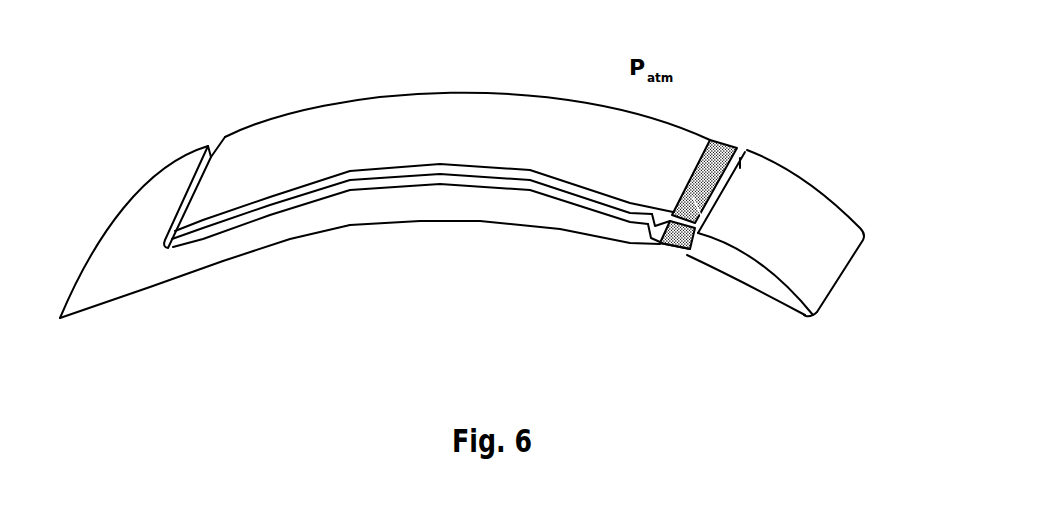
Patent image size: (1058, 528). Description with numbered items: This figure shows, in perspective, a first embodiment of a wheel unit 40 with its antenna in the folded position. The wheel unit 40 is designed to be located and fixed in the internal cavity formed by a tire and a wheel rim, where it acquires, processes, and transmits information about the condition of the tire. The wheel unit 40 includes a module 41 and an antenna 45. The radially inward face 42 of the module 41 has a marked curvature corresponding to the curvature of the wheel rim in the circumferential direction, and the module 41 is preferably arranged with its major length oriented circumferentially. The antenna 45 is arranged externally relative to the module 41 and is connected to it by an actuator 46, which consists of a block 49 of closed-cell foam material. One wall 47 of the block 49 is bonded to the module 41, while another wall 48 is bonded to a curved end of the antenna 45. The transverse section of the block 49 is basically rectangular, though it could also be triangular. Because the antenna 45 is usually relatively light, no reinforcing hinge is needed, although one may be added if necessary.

The wheel unit 40 is at (215, 282).
The module 41 is at (312, 218).
The radially inward face 42 is at (505, 227).
The antenna 45 is at (420, 132).
The actuator 46 is at (664, 247).
The wall 47 is at (672, 251).
The wall 48 is at (690, 178).
The block 49 is at (680, 251).